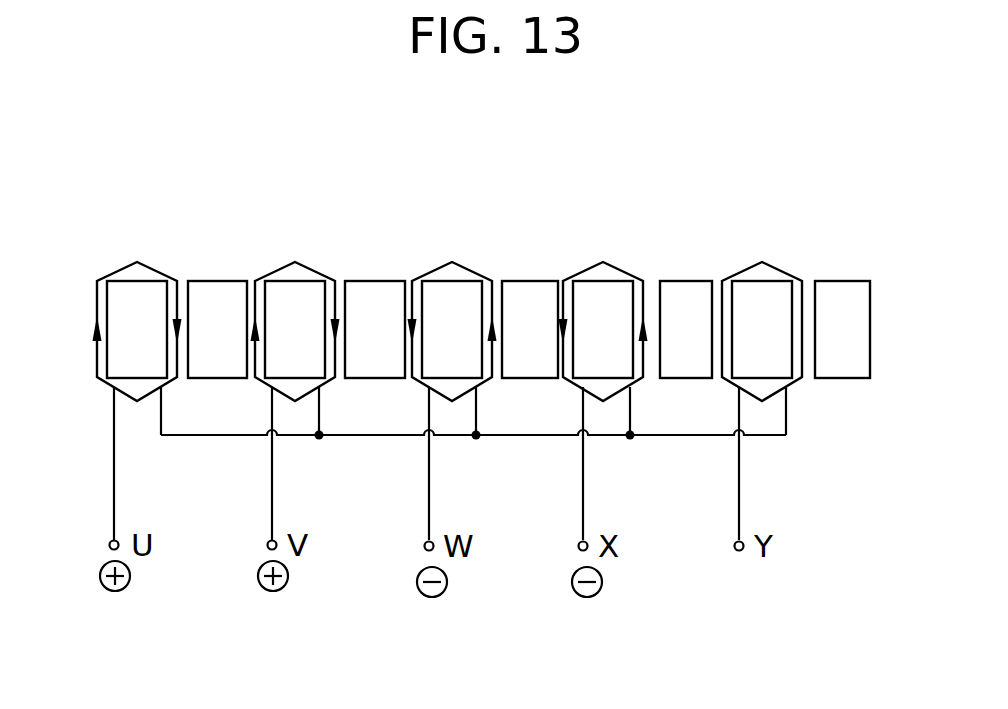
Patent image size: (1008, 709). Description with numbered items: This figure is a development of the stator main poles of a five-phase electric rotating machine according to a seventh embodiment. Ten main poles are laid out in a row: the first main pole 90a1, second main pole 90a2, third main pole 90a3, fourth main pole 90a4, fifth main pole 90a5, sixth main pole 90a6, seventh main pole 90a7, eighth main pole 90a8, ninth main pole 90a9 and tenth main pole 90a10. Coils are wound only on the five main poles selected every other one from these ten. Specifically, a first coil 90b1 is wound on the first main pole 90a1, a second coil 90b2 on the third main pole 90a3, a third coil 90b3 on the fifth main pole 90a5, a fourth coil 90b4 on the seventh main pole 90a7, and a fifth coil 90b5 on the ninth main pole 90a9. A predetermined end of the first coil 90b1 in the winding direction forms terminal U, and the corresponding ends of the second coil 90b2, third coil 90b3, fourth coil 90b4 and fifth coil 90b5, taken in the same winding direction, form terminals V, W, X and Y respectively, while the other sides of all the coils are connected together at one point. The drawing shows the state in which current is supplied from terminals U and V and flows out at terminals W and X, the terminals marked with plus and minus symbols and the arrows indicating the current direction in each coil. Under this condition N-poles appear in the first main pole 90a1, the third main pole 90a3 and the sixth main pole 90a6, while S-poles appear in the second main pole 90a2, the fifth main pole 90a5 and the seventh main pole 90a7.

The first coil 90b1 is at (112, 265).
The second coil 90b2 is at (272, 266).
The third coil 90b3 is at (448, 265).
The fourth coil 90b4 is at (601, 266).
The fifth coil 90b5 is at (747, 271).
The first main pole 90a1 is at (148, 293).
The second main pole 90a2 is at (218, 290).
The third main pole 90a3 is at (311, 293).
The fourth main pole 90a4 is at (373, 292).
The fifth main pole 90a5 is at (458, 298).
The sixth main pole 90a6 is at (526, 295).
The seventh main pole 90a7 is at (612, 296).
The eighth main pole 90a8 is at (679, 296).
The ninth main pole 90a9 is at (759, 296).
The tenth main pole 90a10 is at (831, 297).